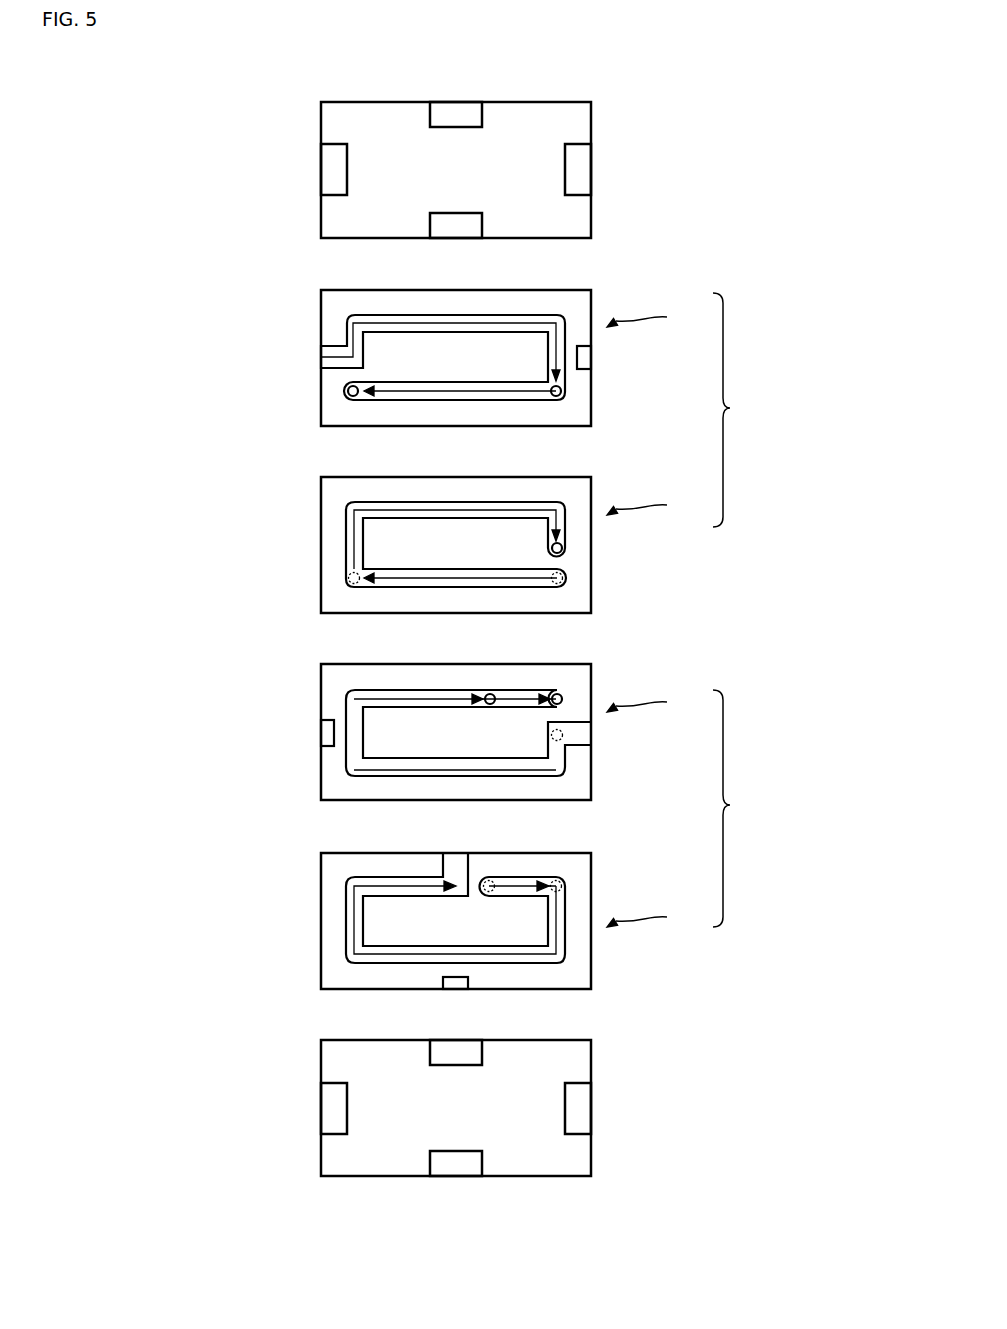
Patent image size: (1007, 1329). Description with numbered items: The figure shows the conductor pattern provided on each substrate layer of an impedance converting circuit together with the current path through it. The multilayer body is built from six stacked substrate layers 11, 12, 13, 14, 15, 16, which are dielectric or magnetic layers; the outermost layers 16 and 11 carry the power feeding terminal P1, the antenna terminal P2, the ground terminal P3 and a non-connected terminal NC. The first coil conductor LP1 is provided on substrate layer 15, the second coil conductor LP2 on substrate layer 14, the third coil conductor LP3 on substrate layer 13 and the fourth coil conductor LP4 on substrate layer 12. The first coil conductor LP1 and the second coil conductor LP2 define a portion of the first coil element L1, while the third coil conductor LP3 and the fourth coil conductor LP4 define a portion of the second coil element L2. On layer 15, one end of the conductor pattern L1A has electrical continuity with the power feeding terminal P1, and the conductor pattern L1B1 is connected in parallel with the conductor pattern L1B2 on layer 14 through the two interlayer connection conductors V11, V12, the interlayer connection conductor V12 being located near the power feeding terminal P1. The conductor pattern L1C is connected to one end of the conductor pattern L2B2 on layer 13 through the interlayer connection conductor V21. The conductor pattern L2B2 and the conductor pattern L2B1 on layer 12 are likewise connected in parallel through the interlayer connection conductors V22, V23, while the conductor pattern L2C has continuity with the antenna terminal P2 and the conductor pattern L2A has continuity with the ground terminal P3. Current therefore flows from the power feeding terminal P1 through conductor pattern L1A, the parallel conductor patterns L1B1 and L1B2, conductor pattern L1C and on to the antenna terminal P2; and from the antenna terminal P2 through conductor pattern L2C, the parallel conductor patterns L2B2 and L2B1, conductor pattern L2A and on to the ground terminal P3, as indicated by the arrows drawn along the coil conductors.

The substrate layer 11 is at (591, 1040).
The substrate layer 12 is at (591, 853).
The substrate layer 13 is at (591, 664).
The substrate layer 14 is at (591, 477).
The substrate layer 15 is at (591, 290).
The substrate layer 16 is at (591, 102).
The power feeding terminal P1 is at (315, 639).
The antenna terminal P2 is at (596, 639).
The ground terminal P3 is at (456, 571).
The non-connected terminal NC is at (456, 708).
The first coil element L1 is at (736, 410).
The second coil element L2 is at (736, 808).
The conductor pattern L1A is at (503, 313).
The conductor pattern L1B1 is at (444, 401).
The conductor pattern L1B2 is at (445, 588).
The conductor pattern L1C is at (505, 502).
The conductor pattern L2A is at (520, 965).
The conductor pattern L2B1 is at (522, 877).
The conductor pattern L2B2 is at (520, 690).
The conductor pattern L2C is at (405, 777).
The interlayer connection conductor V11 is at (566, 391).
The interlayer connection conductor V12 is at (344, 391).
The interlayer connection conductor V21 is at (567, 548).
The interlayer connection conductor V22 is at (488, 706).
The interlayer connection conductor V23 is at (567, 696).
The first coil conductor LP1 is at (657, 317).
The second coil conductor LP2 is at (657, 505).
The third coil conductor LP3 is at (657, 702).
The fourth coil conductor LP4 is at (657, 917).